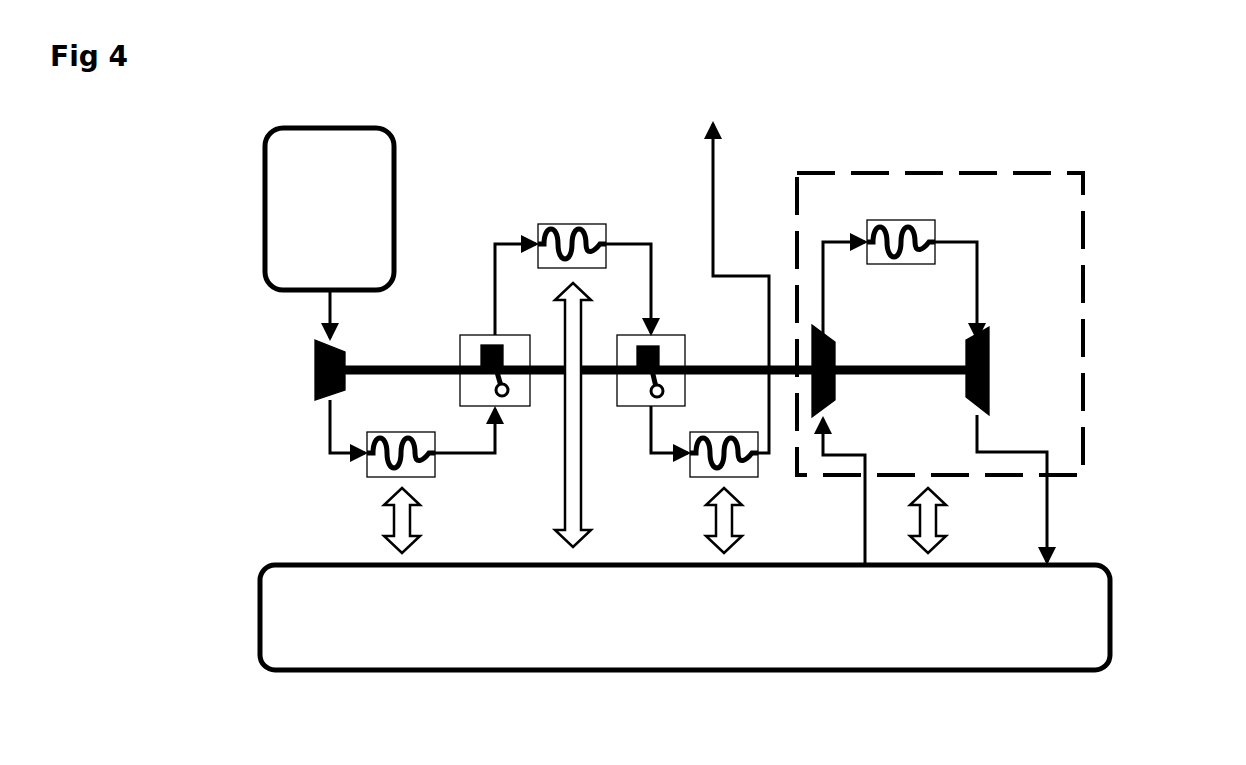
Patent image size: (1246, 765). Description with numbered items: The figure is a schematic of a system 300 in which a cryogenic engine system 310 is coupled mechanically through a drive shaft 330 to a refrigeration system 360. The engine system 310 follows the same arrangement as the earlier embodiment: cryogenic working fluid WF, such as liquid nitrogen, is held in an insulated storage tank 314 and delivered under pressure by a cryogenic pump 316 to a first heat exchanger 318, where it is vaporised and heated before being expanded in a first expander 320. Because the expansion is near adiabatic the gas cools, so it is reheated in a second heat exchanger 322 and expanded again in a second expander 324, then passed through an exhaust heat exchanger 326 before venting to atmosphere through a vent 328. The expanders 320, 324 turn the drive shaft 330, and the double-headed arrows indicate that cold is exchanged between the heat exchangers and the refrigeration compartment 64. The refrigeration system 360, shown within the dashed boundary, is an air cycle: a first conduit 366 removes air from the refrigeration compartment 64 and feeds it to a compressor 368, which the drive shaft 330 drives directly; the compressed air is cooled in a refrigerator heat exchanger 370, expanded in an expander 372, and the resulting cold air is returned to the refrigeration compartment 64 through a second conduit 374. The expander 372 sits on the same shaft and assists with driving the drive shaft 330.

The system 300 is at (657, 100).
The cryogenic engine system 310 is at (505, 120).
The working fluid tank 314 is at (383, 165).
The first turbine 316 is at (313, 373).
The first heat exchanger 318 is at (372, 476).
The first piston pump 320 is at (470, 333).
The second heat exchanger 322 is at (598, 224).
The second piston pump 324 is at (667, 335).
The third heat exchanger 326 is at (700, 477).
The output line 328 is at (715, 145).
The drive shaft 330 is at (703, 363).
The refrigeration system 360 is at (940, 168).
The first conduit 366 is at (864, 505).
The compressor 368 is at (833, 335).
The refrigerator heat exchanger 370 is at (930, 224).
The expander 372 is at (990, 340).
The second conduit 374 is at (1048, 503).
The refrigeration compartment 64 is at (1093, 612).
The cryogenic working fluid WF is at (383, 185).